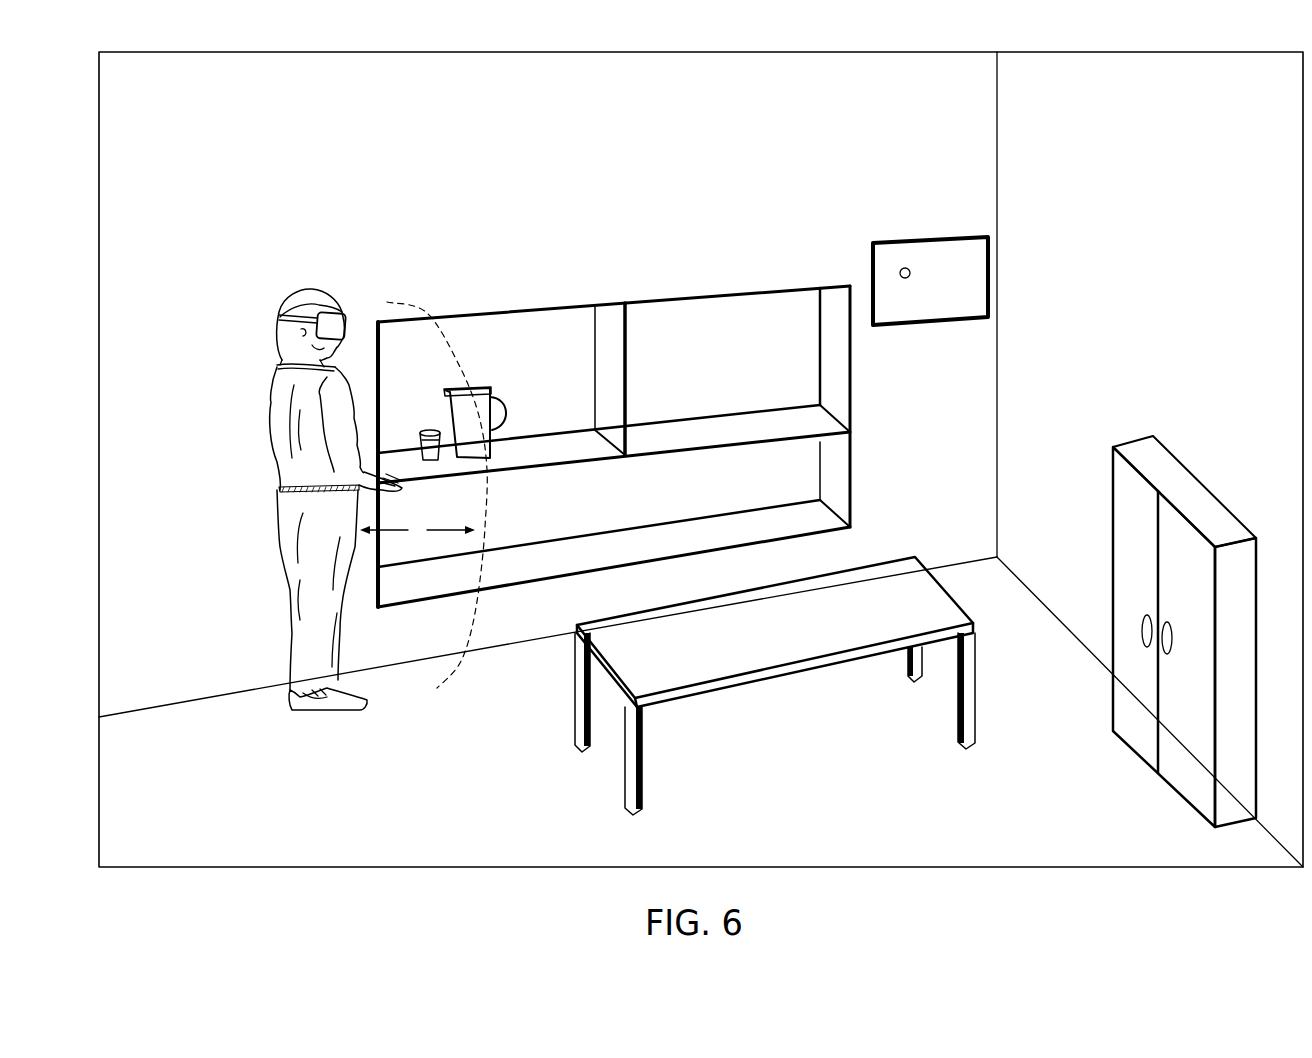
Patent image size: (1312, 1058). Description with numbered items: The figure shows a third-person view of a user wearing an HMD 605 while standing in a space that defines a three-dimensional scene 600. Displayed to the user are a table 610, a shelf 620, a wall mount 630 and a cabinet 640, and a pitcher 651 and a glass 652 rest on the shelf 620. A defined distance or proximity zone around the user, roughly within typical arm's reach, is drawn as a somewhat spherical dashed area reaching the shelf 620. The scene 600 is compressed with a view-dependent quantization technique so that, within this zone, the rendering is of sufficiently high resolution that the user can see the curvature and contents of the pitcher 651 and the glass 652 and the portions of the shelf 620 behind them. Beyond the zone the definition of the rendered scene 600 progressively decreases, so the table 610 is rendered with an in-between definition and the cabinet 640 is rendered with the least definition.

The 3D scene 600 is at (152, 35).
The HMD 605 is at (342, 320).
The table 610 is at (907, 552).
The shelf 620 is at (832, 397).
The wall mount 630 is at (912, 240).
The cabinet 640 is at (1172, 455).
The pitcher 651 is at (493, 392).
The glass 652 is at (417, 425).